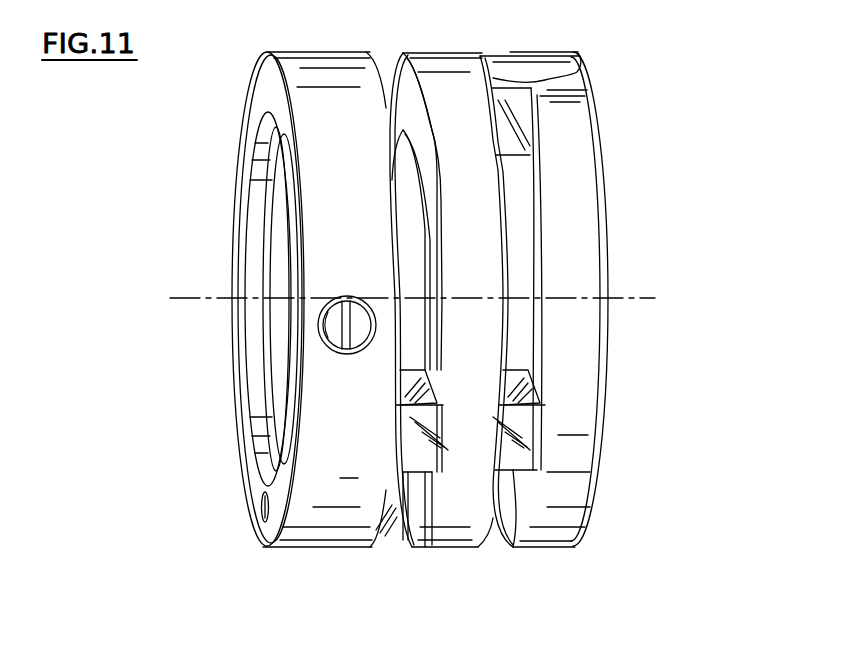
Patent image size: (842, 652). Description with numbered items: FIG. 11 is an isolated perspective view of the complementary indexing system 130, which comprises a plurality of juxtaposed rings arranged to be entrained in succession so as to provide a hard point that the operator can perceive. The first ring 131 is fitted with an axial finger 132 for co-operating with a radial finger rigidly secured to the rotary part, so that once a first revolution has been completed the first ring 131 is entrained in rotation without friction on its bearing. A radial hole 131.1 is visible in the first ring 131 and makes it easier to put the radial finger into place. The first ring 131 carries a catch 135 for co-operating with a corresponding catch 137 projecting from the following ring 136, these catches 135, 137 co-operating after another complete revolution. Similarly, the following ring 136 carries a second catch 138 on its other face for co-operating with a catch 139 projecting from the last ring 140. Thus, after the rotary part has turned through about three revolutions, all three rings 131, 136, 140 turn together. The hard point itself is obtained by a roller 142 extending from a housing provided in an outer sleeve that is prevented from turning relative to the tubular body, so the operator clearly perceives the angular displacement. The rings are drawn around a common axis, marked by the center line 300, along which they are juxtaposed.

The indexing system 130 is at (222, 84).
The first ring 131 is at (310, 52).
The radial hole 131.1 is at (320, 335).
The axial finger 132 is at (261, 507).
The catch 135 is at (395, 500).
The following ring 136 is at (409, 274).
The catch 137 is at (416, 447).
The second catch 138 is at (530, 433).
The catch 139 is at (513, 123).
The last ring 140 is at (577, 277).
The roller 142 is at (533, 73).
The axis 300 is at (186, 298).